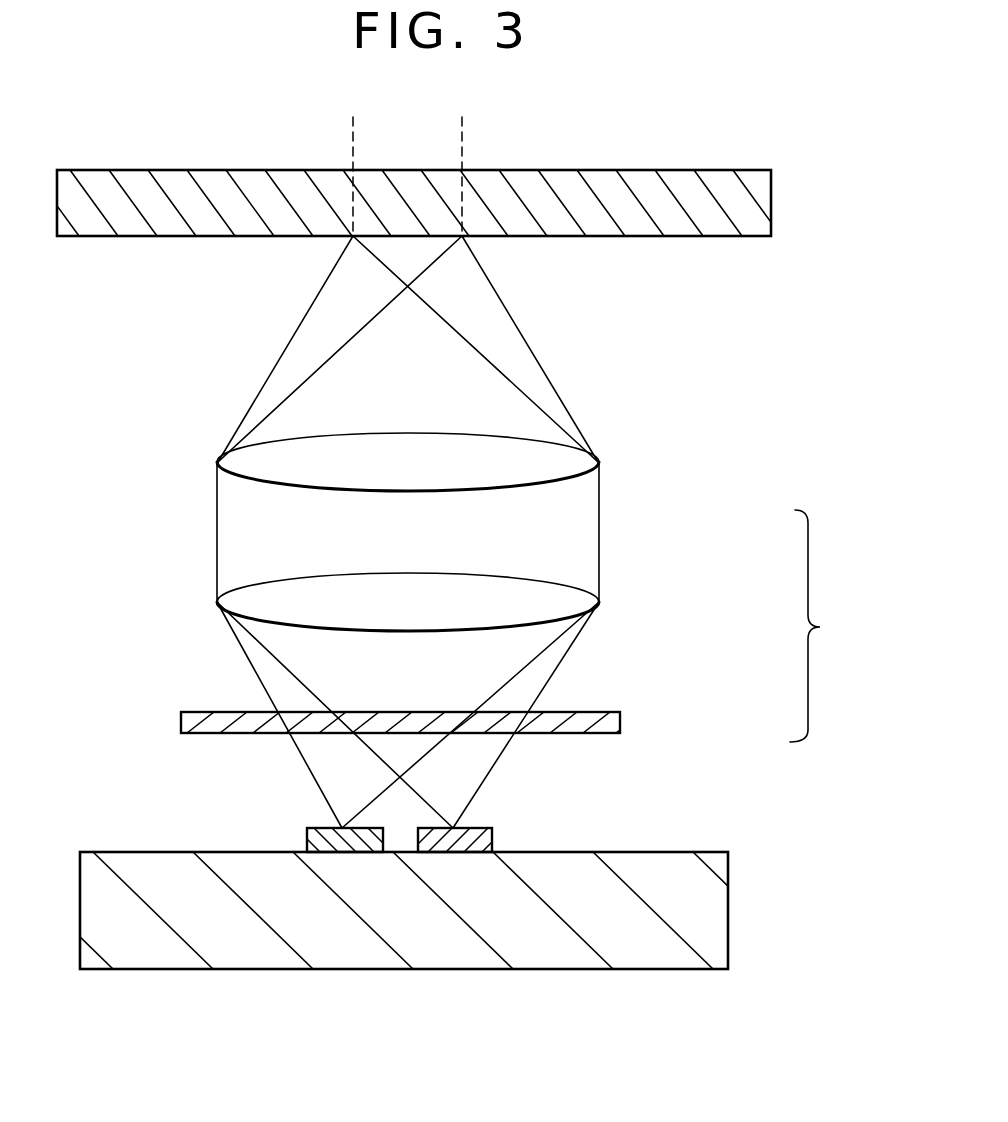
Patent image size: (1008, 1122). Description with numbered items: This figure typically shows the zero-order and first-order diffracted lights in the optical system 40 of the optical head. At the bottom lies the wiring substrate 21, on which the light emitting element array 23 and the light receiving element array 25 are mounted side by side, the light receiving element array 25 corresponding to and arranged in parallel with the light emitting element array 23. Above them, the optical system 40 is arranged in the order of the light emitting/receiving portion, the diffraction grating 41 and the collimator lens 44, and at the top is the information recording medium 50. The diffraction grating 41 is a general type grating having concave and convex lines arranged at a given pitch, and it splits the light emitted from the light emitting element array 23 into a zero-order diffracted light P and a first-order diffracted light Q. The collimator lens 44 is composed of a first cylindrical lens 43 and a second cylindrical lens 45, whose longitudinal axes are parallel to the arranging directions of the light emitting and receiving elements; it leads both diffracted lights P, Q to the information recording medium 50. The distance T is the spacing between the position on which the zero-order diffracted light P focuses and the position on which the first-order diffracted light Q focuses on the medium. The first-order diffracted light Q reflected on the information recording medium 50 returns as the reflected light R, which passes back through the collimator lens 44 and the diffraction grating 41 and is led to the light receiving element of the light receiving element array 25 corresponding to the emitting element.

The information recording medium 50 is at (771, 198).
The second cylindrical lens 45 is at (599, 462).
The first cylindrical lens 43 is at (456, 602).
The collimator lens 44 is at (500, 532).
The optical system 40 is at (829, 626).
The diffraction grating 41 is at (620, 720).
The wiring substrate 21 is at (712, 908).
The light emitting element array 23 is at (310, 836).
The light receiving element array 25 is at (492, 834).
The zero-order diffracted light P is at (307, 306).
The first-order diffracted light Q is at (510, 302).
The reflected first-order diffracted light R is at (308, 771).
The distance between focus positions T is at (462, 124).